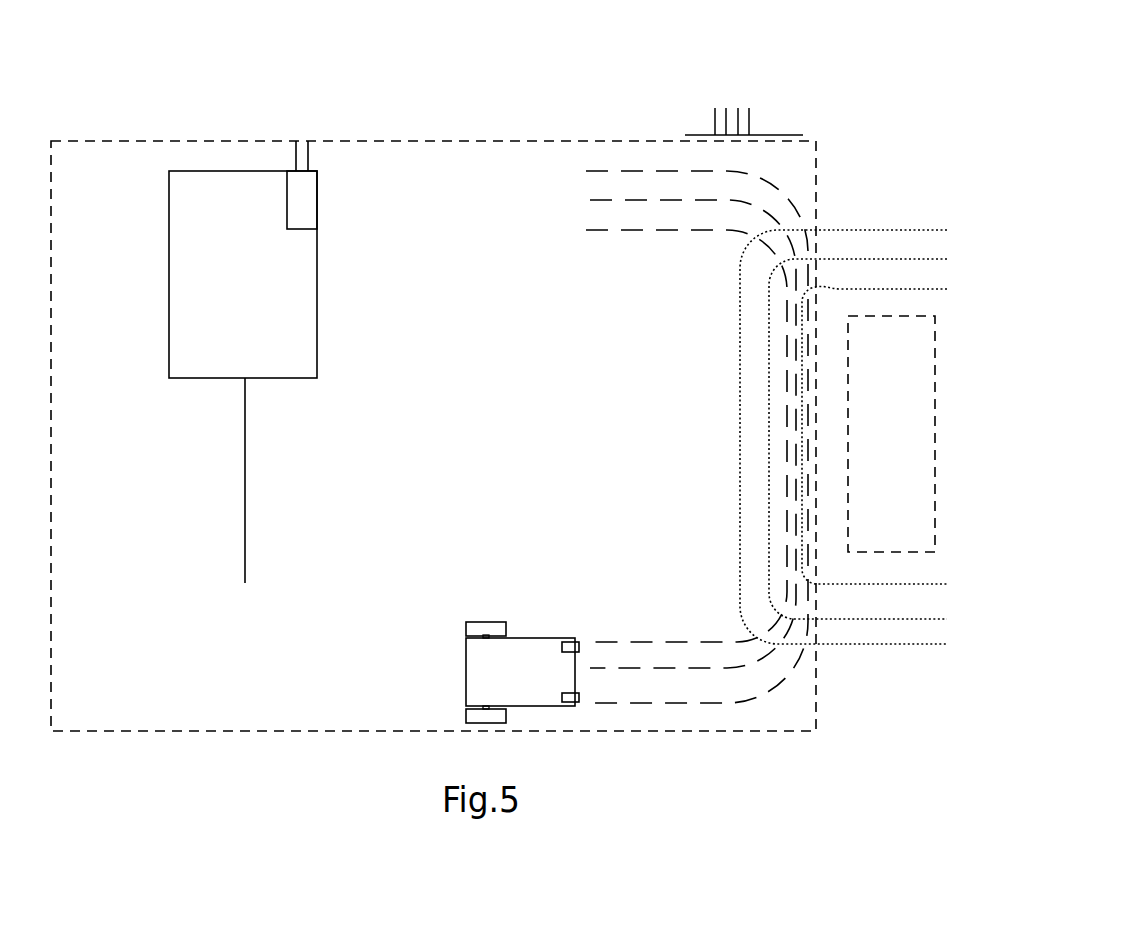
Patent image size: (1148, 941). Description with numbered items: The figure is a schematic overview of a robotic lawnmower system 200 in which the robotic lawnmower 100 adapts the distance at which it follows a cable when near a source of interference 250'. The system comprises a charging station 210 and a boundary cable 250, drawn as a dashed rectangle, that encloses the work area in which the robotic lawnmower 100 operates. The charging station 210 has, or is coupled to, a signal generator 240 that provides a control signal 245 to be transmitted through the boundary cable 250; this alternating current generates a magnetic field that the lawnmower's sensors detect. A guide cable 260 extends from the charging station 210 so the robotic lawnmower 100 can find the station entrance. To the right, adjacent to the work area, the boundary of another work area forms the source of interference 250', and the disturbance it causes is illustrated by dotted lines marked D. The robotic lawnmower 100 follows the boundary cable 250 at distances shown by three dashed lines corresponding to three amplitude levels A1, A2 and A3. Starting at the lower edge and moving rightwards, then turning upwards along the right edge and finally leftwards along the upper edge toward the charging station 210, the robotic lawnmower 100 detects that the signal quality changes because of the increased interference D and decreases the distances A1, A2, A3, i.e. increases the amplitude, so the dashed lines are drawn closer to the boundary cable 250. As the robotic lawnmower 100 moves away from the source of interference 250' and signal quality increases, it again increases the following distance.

The robotic lawnmower 100 is at (522, 672).
The robotic lawnmower system 200 is at (165, 167).
The charging station 210 is at (169, 236).
The signal generator 240 is at (317, 213).
The control signal 245 is at (744, 120).
The boundary cable 250 is at (433, 436).
The source of interference 250' is at (891, 434).
The guide cable 260 is at (245, 414).
The disturbance D is at (843, 437).
The first amplitude level A1 is at (672, 432).
The second amplitude level A2 is at (666, 428).
The third amplitude level A3 is at (662, 430).